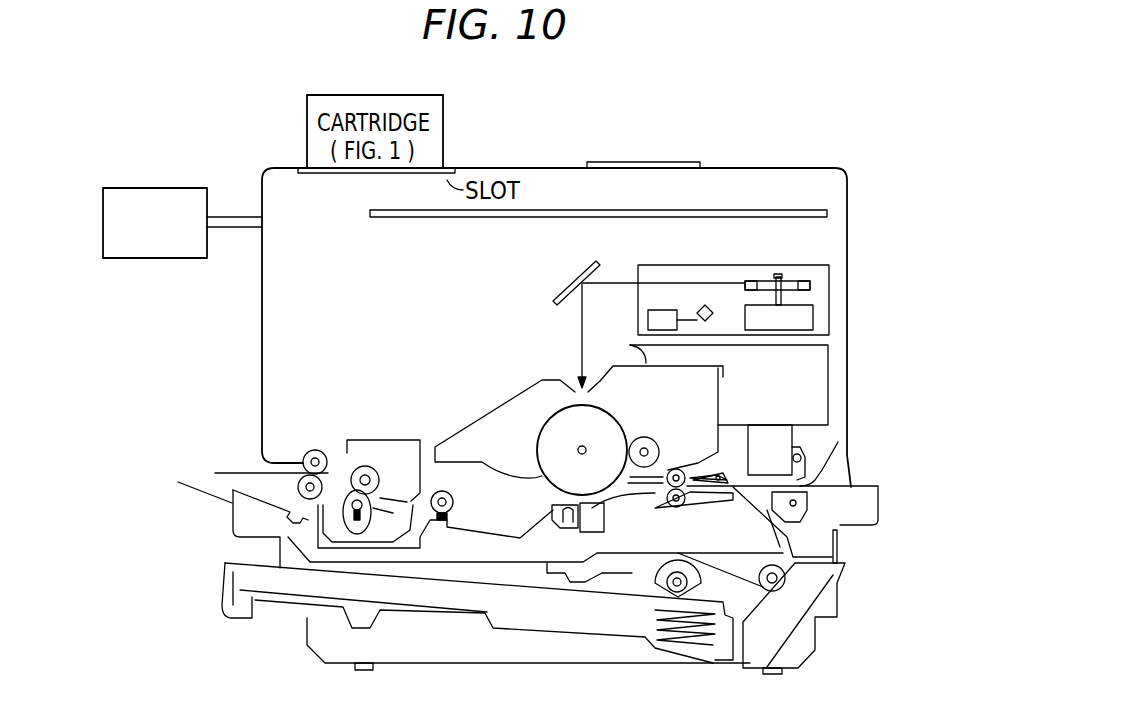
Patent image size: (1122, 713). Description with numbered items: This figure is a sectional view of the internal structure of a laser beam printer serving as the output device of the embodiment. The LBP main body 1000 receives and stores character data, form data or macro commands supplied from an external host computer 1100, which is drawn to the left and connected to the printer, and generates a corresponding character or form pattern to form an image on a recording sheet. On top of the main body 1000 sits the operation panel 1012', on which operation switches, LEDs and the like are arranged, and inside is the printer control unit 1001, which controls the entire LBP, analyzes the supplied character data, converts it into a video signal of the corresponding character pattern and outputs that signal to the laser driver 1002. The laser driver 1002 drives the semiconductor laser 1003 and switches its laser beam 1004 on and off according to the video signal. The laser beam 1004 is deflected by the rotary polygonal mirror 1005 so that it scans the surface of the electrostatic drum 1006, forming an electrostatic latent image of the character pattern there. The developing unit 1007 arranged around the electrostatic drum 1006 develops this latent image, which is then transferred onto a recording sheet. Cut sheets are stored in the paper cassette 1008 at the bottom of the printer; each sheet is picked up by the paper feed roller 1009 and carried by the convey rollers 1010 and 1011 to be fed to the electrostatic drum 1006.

The LBP main body 1000 is at (800, 168).
The printer control unit 1001 is at (827, 214).
The laser driver 1002 is at (648, 320).
The semiconductor laser 1003 is at (712, 318).
The laser beam 1004 is at (713, 307).
The rotary polygonal mirror 1005 is at (810, 285).
The electrostatic drum 1006 is at (553, 415).
The developing unit 1007 is at (473, 428).
The paper cassette 1008 is at (222, 590).
The paper feed roller 1009 is at (662, 580).
The convey roller 1010 is at (787, 588).
The convey roller 1011 is at (673, 507).
The operation panel 1012' is at (648, 132).
The host computer 1100 is at (137, 188).